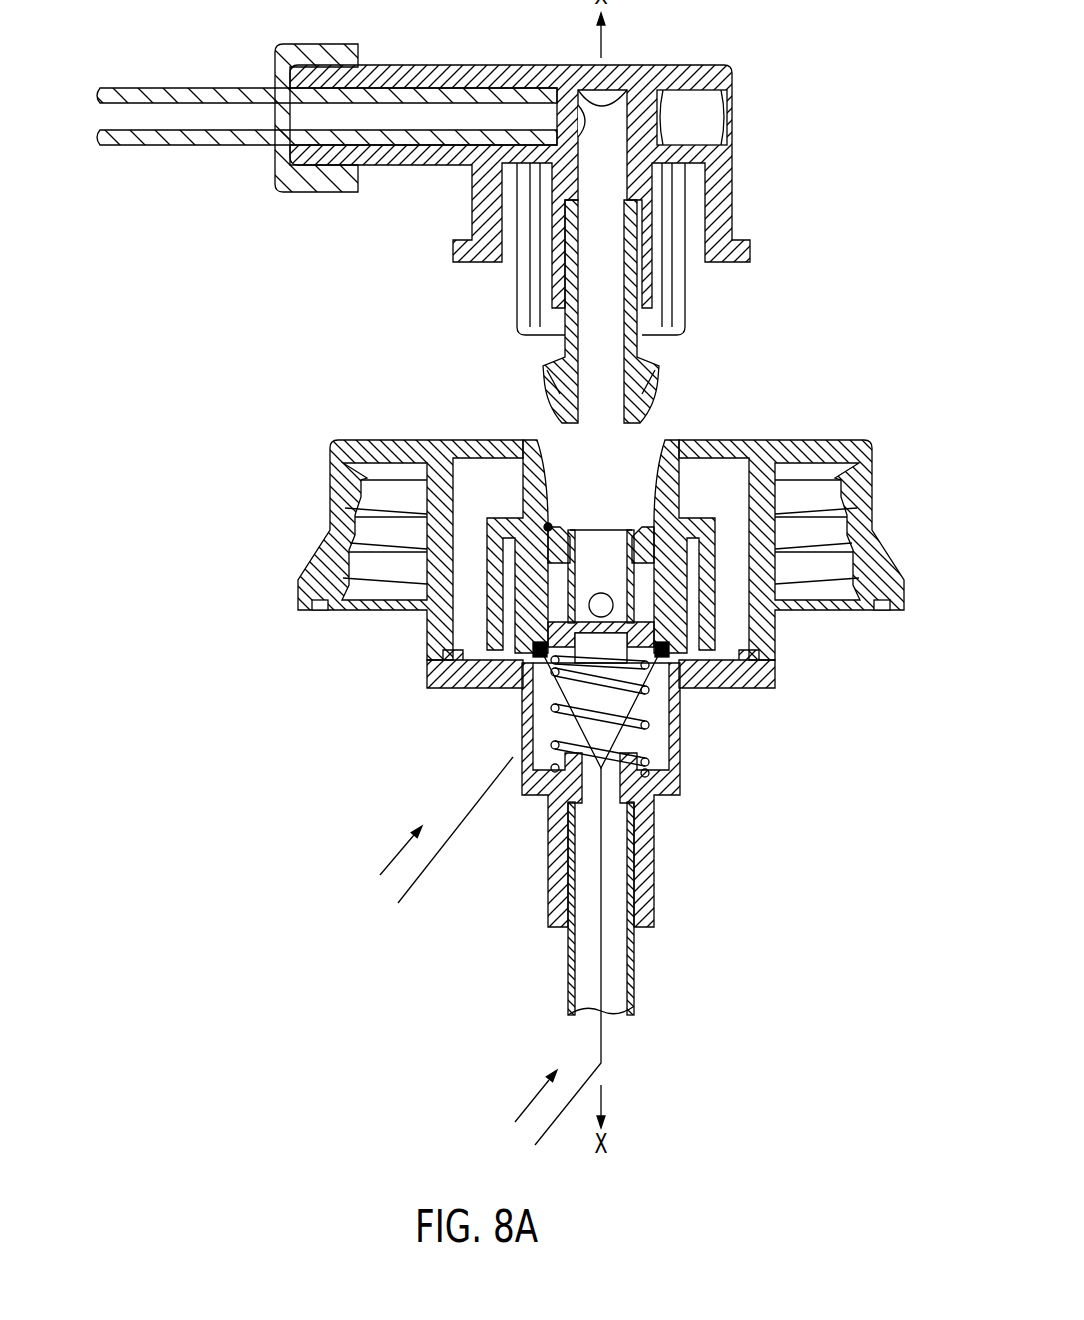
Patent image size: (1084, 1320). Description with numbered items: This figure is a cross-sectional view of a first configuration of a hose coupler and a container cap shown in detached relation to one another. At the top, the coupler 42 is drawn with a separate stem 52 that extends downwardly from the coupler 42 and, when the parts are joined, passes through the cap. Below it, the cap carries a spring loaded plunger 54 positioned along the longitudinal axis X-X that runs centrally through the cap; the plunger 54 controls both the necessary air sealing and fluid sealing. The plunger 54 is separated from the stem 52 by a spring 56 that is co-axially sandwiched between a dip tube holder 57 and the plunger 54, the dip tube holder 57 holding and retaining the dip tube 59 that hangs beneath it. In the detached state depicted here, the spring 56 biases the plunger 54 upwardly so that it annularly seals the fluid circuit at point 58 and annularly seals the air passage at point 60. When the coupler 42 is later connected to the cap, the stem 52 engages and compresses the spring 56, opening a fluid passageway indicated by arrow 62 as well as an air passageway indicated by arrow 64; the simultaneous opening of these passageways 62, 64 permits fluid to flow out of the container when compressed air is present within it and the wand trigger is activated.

The coupler 42 is at (727, 207).
The stem 52 is at (648, 398).
The spring loaded plunger 54 is at (640, 538).
The spring 56 is at (648, 726).
The dip tube holder 57 is at (655, 880).
The fluid circuit sealing point 58 is at (672, 663).
The dip tube 59 is at (633, 985).
The air passage sealing point 60 is at (516, 560).
The fluid passageway arrow 62 is at (523, 1125).
The air passageway arrow 64 is at (395, 875).